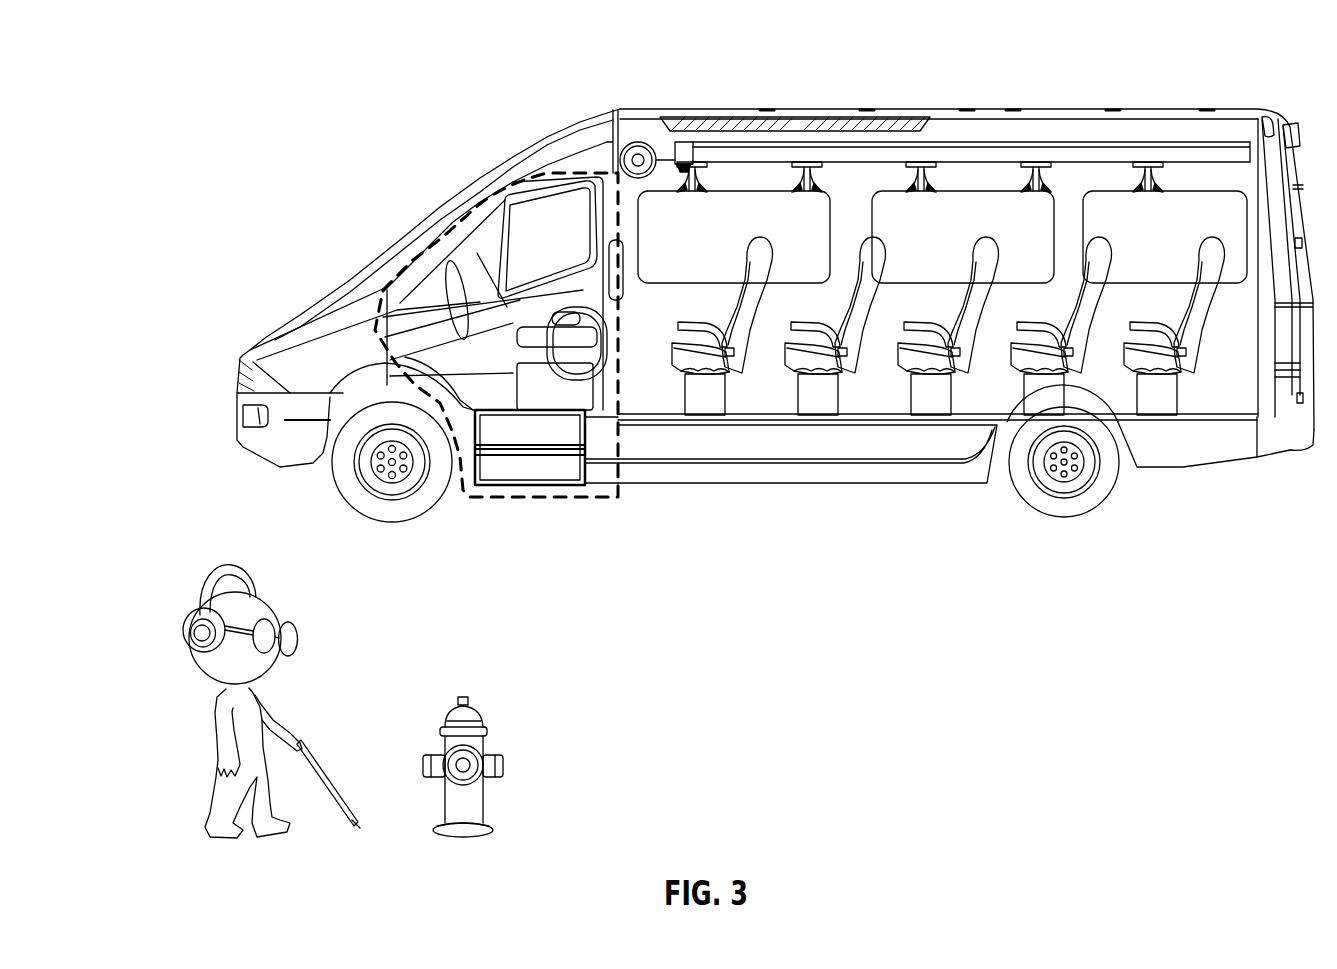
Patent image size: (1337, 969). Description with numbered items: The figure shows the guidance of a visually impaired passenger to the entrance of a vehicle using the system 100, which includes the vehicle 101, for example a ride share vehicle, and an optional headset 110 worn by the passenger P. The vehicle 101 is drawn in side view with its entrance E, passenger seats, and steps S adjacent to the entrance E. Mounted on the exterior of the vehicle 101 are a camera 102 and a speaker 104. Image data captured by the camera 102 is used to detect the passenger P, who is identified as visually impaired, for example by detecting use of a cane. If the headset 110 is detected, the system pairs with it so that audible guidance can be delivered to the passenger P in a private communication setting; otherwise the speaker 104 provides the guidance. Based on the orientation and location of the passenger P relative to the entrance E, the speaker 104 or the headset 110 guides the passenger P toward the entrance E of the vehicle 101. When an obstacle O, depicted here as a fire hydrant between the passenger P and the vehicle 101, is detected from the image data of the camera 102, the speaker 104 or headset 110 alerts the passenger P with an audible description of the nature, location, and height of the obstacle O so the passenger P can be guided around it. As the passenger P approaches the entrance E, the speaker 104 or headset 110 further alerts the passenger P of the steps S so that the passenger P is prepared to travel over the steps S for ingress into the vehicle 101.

The system 100 is at (355, 76).
The vehicle 101 is at (1232, 83).
The camera 102 is at (693, 143).
The speaker 104 is at (642, 143).
The headset 110 is at (200, 590).
The entrance E is at (440, 232).
The steps S is at (588, 473).
The passenger P is at (216, 713).
The obstacle O is at (477, 717).